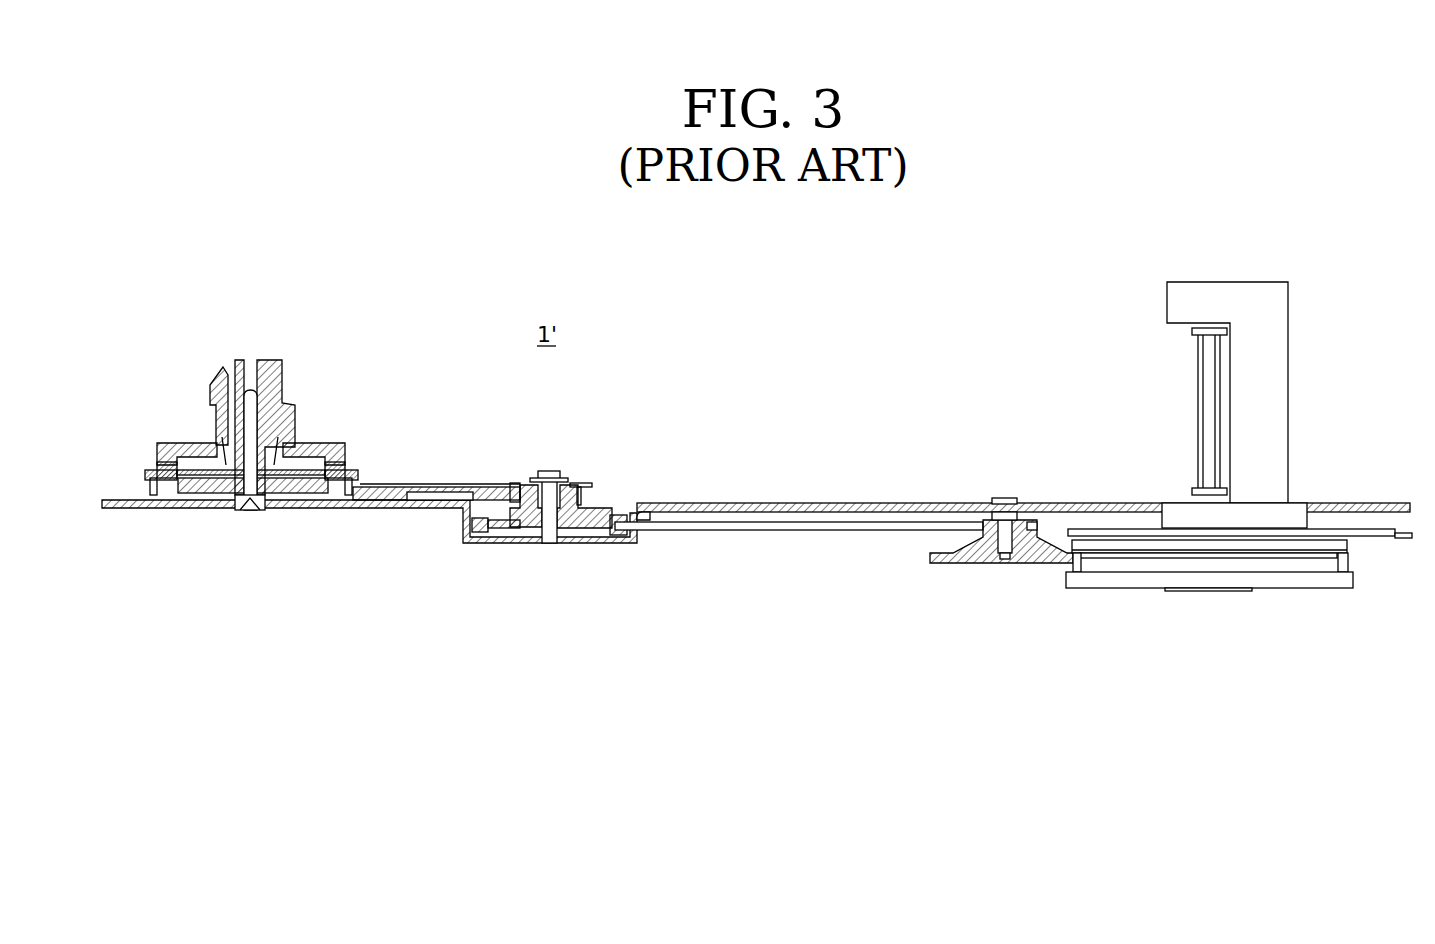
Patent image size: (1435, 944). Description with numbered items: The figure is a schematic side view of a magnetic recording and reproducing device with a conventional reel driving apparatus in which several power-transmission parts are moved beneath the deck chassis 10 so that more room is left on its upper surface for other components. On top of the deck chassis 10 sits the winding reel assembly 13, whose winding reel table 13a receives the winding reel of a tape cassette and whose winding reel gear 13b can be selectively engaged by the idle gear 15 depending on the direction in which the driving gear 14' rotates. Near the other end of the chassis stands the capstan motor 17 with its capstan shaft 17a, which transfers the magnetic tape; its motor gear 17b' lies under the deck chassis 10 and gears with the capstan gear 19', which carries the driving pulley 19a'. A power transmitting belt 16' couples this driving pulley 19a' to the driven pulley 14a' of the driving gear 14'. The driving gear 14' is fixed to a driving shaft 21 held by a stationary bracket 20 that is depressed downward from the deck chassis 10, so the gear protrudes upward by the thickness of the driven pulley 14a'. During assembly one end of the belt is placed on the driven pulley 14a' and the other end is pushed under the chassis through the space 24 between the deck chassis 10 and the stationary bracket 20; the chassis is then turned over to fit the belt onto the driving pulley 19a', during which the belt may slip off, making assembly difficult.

The deck chassis 10 is at (723, 502).
The winding reel assembly 13 is at (257, 396).
The winding reel table 13a is at (285, 400).
The winding reel gear 13b is at (333, 457).
The driving gear 14' is at (561, 467).
The driven pulley 14a' is at (622, 561).
The idle gear 15 is at (381, 489).
The power transmitting belt 16' is at (799, 555).
The capstan motor 17 is at (1239, 460).
The capstan shaft 17a is at (1198, 385).
The motor gear 17b' is at (1213, 599).
The capstan gear 19' is at (1011, 495).
The driving pulley 19a' is at (990, 493).
The stationary bracket 20 is at (478, 546).
The driving shaft 21 is at (548, 546).
The space 24 is at (639, 501).